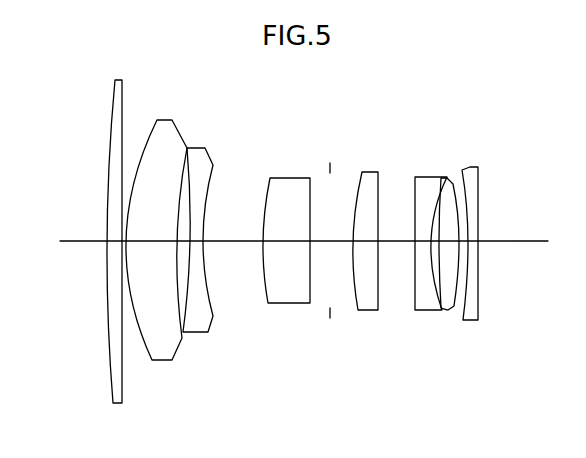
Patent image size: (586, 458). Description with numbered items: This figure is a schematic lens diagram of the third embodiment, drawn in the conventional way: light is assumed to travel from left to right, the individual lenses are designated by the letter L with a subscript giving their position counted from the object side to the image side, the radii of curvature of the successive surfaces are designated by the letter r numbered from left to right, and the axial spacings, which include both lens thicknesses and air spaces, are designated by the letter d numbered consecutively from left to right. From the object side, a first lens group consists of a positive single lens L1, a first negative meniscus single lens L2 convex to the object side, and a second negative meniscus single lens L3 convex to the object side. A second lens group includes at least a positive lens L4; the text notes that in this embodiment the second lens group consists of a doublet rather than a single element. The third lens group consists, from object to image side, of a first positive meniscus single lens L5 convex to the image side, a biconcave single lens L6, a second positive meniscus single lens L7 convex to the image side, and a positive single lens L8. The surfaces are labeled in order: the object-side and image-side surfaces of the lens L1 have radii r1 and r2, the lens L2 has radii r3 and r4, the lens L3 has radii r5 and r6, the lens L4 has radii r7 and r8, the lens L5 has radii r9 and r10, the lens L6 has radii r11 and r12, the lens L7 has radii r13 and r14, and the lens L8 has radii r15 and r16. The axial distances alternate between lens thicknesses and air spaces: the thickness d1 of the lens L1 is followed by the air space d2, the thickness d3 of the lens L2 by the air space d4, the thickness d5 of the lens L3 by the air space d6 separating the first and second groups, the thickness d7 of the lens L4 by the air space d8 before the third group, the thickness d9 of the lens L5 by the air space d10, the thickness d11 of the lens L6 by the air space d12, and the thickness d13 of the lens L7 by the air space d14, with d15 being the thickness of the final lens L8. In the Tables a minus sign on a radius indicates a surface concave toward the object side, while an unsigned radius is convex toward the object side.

The positive single lens L1 is at (118, 80).
The first negative meniscus single lens L2 is at (165, 120).
The second negative meniscus single lens L3 is at (205, 150).
The positive lens L4 is at (290, 178).
The first positive meniscus single lens L5 is at (370, 172).
The biconcave single lens L6 is at (422, 211).
The second positive meniscus single lens L7 is at (454, 211).
The positive single lens L8 is at (489, 216).
The axial thickness of first lens d1 is at (110, 240).
The air space between first and second lenses d2 is at (118, 243).
The axial thickness of second lens d3 is at (135, 240).
The air space between second and third lenses d4 is at (160, 241).
The axial thickness of third lens d5 is at (195, 240).
The air space between first and second lens groups d6 is at (239, 225).
The axial thickness of fourth lens d7 is at (291, 240).
The air space between second and third lens groups d8 is at (330, 240).
The axial thickness of fifth lens d9 is at (367, 240).
The air space between fifth and sixth lenses d10 is at (397, 241).
The axial thickness of sixth lens d11 is at (425, 240).
The air space between sixth and seventh lenses d12 is at (448, 215).
The axial thickness of seventh lens d13 is at (462, 220).
The air space between seventh and eighth lenses d14 is at (468, 265).
The axial thickness of eighth lens d15 is at (470, 250).
The radius of curvature of first surface r1 is at (110, 395).
The radius of curvature of second surface r2 is at (122, 392).
The radius of curvature of third surface r3 is at (150, 356).
The radius of curvature of fourth surface r4 is at (186, 340).
The radius of curvature of fifth surface r5 is at (184, 338).
The radius of curvature of sixth surface r6 is at (213, 318).
The radius of curvature of seventh surface r7 is at (266, 297).
The radius of curvature of eighth surface r8 is at (309, 296).
The radius of curvature of ninth surface r9 is at (358, 308).
The radius of curvature of tenth surface r10 is at (378, 310).
The radius of curvature of eleventh surface r11 is at (413, 308).
The radius of curvature of twelfth surface r12 is at (441, 308).
The radius of curvature of thirteenth surface r13 is at (441, 305).
The radius of curvature of fourteenth surface r14 is at (453, 306).
The radius of curvature of fifteenth surface r15 is at (465, 318).
The radius of curvature of sixteenth surface r16 is at (478, 320).